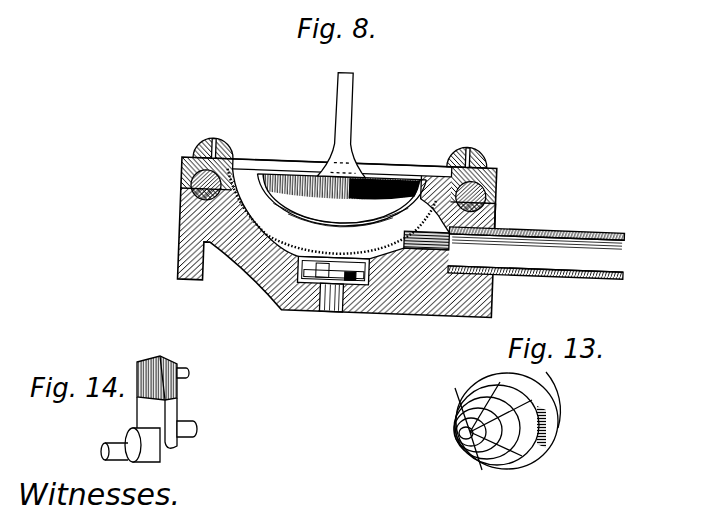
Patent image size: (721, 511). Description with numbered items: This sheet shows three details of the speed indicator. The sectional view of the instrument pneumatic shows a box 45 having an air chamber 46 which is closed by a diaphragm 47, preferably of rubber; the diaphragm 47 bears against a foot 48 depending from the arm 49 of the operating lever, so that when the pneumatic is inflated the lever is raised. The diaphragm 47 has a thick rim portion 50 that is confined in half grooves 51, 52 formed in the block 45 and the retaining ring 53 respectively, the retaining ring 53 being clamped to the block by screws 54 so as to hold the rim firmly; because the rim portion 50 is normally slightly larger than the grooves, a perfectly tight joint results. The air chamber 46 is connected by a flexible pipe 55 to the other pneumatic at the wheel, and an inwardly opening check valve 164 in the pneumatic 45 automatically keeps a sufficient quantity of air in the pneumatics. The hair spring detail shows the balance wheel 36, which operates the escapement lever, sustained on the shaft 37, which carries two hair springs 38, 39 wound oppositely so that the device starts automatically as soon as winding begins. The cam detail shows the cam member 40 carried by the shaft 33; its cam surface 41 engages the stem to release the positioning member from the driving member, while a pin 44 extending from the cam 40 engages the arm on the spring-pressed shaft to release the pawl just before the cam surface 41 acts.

In FIG. 14, the shaft 33 is at (198, 427).
In FIG. 13, the balance wheel 36 is at (492, 374).
In FIG. 13, the shaft 37 is at (482, 437).
In FIG. 13, the hair spring 38 is at (456, 423).
In FIG. 13, the hair spring 39 is at (554, 403).
In FIG. 14, the cam member 40 is at (178, 414).
In FIG. 14, the cam surface 41 is at (165, 365).
In FIG. 14, the pin 44 is at (190, 372).
In FIG. 8, the box 45 is at (240, 272).
In FIG. 8, the air chamber 46 is at (393, 237).
In FIG. 8, the diaphragm 47 is at (425, 197).
In FIG. 8, the foot 48 is at (301, 207).
In FIG. 8, the arm 49 is at (342, 120).
In FIG. 8, the rim portion 50 is at (500, 187).
In FIG. 8, the half groove 51 is at (500, 207).
In FIG. 8, the half groove 52 is at (480, 170).
In FIG. 8, the retaining ring 53 is at (182, 161).
In FIG. 8, the screws 54 is at (213, 138).
In FIG. 8, the flexible pipe 55 is at (612, 233).
In FIG. 8, the check valve 164 is at (338, 312).